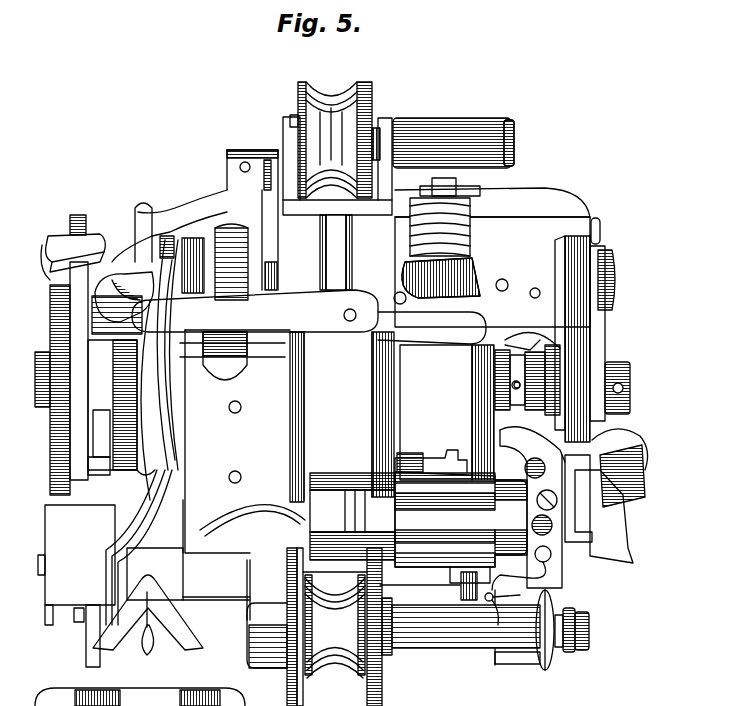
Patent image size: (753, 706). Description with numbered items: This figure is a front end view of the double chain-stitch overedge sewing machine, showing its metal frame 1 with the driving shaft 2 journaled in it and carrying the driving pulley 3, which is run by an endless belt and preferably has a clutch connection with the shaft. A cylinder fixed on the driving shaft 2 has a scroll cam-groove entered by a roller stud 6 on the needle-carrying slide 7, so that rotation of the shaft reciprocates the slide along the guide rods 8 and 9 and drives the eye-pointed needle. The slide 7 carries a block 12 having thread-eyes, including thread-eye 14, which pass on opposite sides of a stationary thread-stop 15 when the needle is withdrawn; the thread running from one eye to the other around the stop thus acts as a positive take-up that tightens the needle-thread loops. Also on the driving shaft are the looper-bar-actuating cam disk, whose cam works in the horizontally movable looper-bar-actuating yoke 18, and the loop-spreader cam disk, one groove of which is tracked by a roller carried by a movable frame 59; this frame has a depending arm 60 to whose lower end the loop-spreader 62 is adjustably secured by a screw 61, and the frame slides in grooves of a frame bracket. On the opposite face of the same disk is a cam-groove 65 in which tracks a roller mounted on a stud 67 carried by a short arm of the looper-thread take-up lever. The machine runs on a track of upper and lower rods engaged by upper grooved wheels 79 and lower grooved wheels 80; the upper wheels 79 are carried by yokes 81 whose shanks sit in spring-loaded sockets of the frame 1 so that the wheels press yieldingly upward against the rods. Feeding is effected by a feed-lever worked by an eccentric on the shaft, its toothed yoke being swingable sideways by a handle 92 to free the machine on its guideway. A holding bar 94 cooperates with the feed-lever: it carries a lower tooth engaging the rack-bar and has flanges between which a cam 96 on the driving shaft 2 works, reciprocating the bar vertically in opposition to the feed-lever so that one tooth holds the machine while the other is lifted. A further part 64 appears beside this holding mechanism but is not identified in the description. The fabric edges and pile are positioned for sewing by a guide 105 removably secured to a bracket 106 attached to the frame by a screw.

The metal frame 1 is at (482, 272).
The driving shaft 2 is at (515, 372).
The driving pulley 3 is at (214, 273).
The roller stud 6 is at (411, 458).
The needle-carrying slide 7 is at (421, 557).
The guide rod 8 is at (338, 490).
The guide rod 9 is at (288, 560).
The block 12 is at (460, 575).
The thread-eye 14 is at (488, 602).
The stationary thread-stop 15 is at (468, 600).
The looper-bar-actuating yoke 18 is at (72, 412).
The movable frame 59 is at (112, 407).
The depending arm 60 is at (97, 490).
The screw 61 is at (76, 624).
The loop-spreader 62 is at (354, 284).
The slide bar 64 is at (604, 256).
The cam-groove 65 is at (616, 298).
The stud 67 is at (630, 388).
The upper grooved wheel 79 is at (356, 97).
The lower grooved wheel 80 is at (380, 698).
The yoke 81 is at (393, 118).
The handle 92 is at (600, 232).
The holding bar 94 is at (565, 238).
The cam 96 is at (543, 390).
The guide 105 is at (190, 648).
The bracket 106 is at (172, 526).